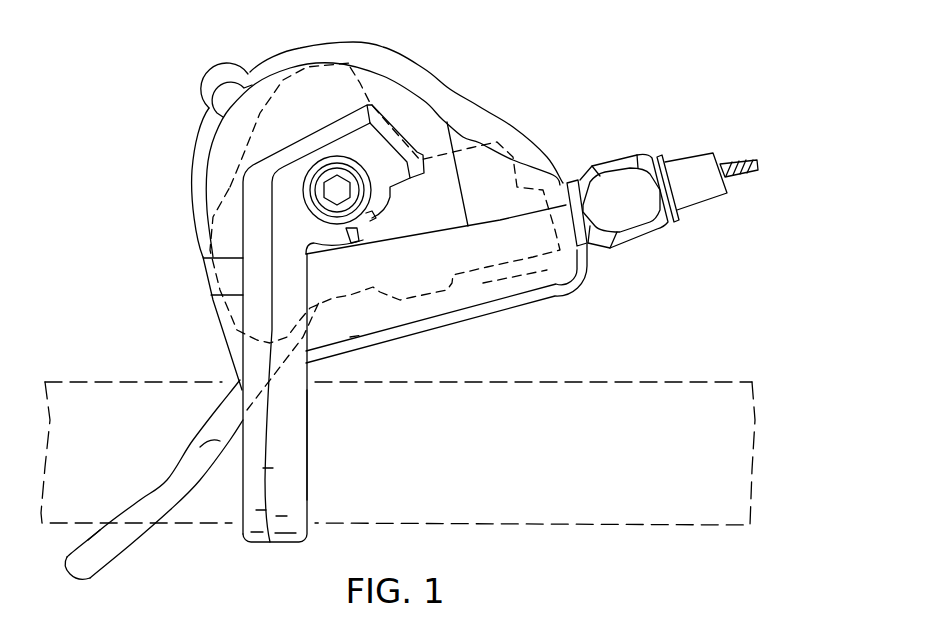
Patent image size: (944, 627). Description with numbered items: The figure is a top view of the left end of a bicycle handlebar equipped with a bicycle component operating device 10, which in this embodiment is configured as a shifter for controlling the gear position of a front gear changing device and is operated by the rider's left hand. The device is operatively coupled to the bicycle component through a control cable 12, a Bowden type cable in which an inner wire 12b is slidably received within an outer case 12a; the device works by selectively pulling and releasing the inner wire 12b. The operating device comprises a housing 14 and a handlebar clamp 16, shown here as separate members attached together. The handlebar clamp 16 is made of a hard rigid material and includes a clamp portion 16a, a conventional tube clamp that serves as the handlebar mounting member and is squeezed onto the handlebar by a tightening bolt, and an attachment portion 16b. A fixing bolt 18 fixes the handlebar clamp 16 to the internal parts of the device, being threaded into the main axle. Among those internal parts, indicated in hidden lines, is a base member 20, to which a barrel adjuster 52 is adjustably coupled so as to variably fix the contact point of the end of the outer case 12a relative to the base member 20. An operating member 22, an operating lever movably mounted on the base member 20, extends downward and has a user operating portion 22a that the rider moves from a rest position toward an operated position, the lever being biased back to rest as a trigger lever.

The bicycle component operating device 10 is at (553, 50).
The control cable 12 is at (653, 92).
The outer case 12a is at (685, 157).
The inner wire 12b is at (733, 162).
The housing 14 is at (424, 68).
The handlebar clamp 16 is at (238, 487).
The clamp portion 16a is at (308, 448).
The attachment portion 16b is at (390, 197).
The fixing bolt 18 is at (313, 190).
The base member 20 is at (231, 187).
The operating member 22 is at (115, 568).
The user operating portion 22a is at (88, 540).
The barrel adjuster 52 is at (640, 245).